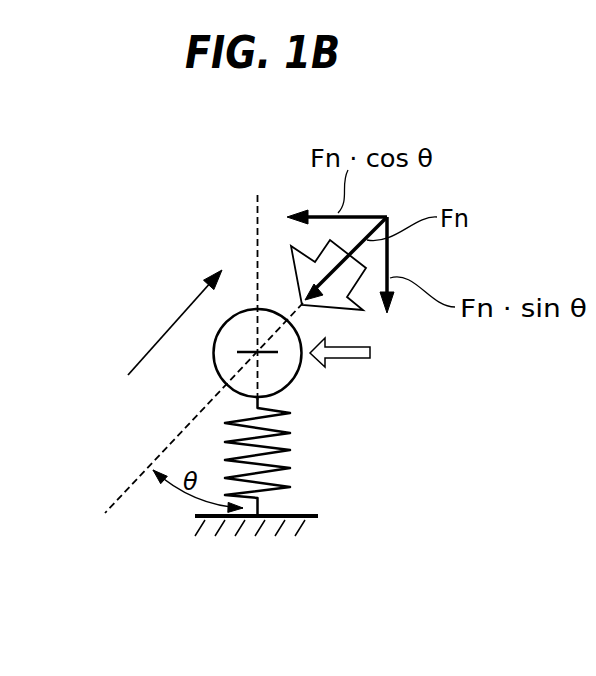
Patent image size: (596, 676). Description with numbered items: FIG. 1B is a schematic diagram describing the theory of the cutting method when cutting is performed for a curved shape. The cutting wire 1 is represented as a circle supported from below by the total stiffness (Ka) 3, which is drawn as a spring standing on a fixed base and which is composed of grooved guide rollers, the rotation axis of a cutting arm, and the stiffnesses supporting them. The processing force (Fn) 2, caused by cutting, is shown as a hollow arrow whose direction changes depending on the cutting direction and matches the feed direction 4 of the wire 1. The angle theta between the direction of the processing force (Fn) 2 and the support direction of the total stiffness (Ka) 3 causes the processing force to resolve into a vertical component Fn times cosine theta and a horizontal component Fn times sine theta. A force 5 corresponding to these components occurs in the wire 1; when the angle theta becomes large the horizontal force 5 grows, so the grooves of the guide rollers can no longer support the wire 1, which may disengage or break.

The cutting wire 1 is at (228, 357).
The processing force Fn 2 is at (350, 267).
The total stiffness Ka 3 is at (290, 450).
The feed direction 4 is at (165, 328).
The force 5 is at (348, 353).